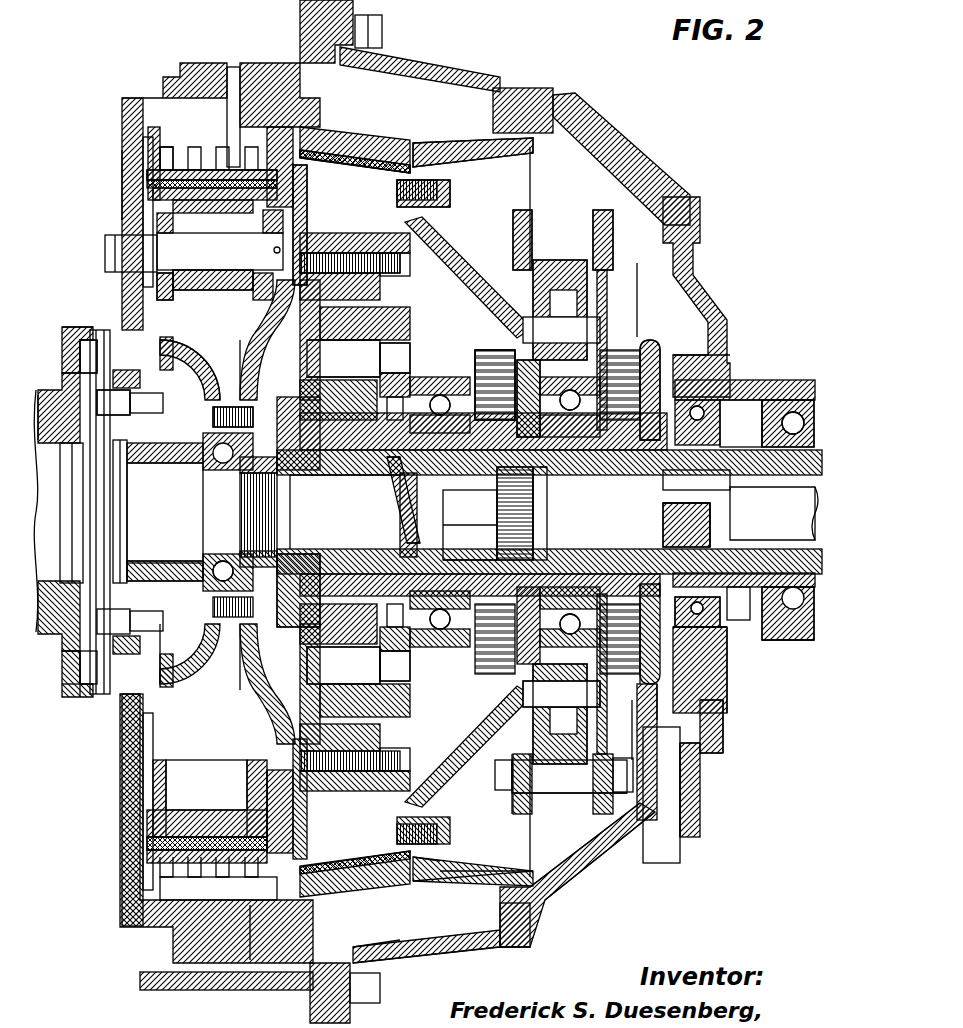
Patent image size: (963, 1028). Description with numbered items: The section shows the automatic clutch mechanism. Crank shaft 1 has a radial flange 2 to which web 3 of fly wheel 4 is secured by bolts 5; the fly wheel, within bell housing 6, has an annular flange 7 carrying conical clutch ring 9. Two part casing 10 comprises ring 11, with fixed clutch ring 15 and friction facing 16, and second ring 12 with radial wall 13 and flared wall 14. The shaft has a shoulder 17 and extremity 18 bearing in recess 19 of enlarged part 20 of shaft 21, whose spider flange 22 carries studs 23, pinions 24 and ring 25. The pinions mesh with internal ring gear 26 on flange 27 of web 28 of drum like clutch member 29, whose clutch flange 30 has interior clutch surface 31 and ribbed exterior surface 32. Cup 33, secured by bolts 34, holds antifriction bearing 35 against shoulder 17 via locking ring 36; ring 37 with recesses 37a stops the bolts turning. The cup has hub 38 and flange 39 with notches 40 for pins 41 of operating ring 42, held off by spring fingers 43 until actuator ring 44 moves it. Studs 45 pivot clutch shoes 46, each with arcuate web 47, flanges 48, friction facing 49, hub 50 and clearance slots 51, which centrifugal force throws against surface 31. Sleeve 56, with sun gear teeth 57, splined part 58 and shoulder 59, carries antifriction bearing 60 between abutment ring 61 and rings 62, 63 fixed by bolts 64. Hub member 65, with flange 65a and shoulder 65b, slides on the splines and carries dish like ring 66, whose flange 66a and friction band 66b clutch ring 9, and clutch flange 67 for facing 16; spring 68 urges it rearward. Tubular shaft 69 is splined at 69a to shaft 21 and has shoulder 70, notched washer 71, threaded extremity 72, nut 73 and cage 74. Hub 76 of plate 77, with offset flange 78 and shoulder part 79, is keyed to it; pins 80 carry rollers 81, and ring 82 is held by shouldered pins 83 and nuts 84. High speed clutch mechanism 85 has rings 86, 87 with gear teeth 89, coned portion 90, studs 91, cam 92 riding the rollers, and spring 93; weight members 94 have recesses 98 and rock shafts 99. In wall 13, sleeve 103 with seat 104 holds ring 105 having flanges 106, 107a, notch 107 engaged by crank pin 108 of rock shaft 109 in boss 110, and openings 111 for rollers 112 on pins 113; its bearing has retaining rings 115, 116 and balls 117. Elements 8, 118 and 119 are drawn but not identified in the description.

The crank shaft 1 is at (43, 457).
The radial flange 2 is at (92, 480).
The web 3 is at (122, 182).
The fly wheel 4 is at (118, 100).
The bolts 5 is at (378, 837).
The bell housing 6 is at (138, 982).
The annular flange 7 is at (252, 965).
The driven shaft 8 is at (807, 508).
The conical clutch ring 9 is at (380, 892).
The two part casing 10 is at (520, 928).
The ring 11 is at (415, 950).
The second ring 12 is at (560, 876).
The radial wall 13 is at (712, 300).
The flared wall 14 is at (585, 852).
The fixed clutch ring 15 is at (442, 887).
The friction facing 16 is at (421, 885).
The shoulder 17 is at (203, 490).
The extremity 18 is at (357, 497).
The recess 19 is at (304, 512).
The part of enlarged diameter 20 is at (400, 480).
The shaft 21 is at (543, 470).
The spider flange 22 is at (307, 655).
The studs 23 is at (368, 503).
The pinion 24 is at (368, 378).
The ring 25 is at (343, 495).
The internal ring gear 26 is at (286, 733).
The annular flange 27 is at (312, 789).
The web 28 is at (305, 200).
The clutch member 29 is at (143, 855).
The clutch flange 30 is at (170, 176).
The interior clutch surface 31 is at (300, 190).
The ribbed exterior surface 32 is at (200, 876).
The cup 33 is at (215, 670).
The bolts 34 is at (213, 415).
The antifriction bearing 35 is at (225, 556).
The threaded locking ring 36 is at (240, 490).
The ring 37 is at (240, 365).
The recesses 37a is at (315, 550).
The hub 38 is at (190, 560).
The peripheral flange 39 is at (165, 690).
The notches 40 is at (175, 370).
The pins 41 is at (99, 355).
The operating ring 42 is at (100, 325).
The spring fingers 43 is at (95, 680).
The actuator ring 44 is at (62, 697).
The studs 45 is at (220, 251).
The clutch shoes 46 is at (143, 200).
The arcuate web 47 is at (277, 170).
The flanges 48 is at (253, 285).
The friction facing 49 is at (205, 150).
The hub 50 is at (210, 300).
The clearance slots 51 is at (105, 255).
The sleeve 56 is at (395, 475).
The teeth 57 is at (405, 540).
The splined part 58 is at (470, 525).
The annular shoulder 59 is at (470, 519).
The antifriction bearing 60 is at (470, 545).
The spring end abutment ring 61 is at (430, 450).
The ring 62 is at (408, 645).
The ring 63 is at (452, 640).
The bolts 64 is at (360, 253).
The hub like member 65 is at (600, 445).
The radial flange 65a is at (500, 350).
The annular shoulder 65b is at (538, 475).
The dish like ring 66 is at (425, 232).
The peripheral flange 66a is at (400, 176).
The friction band 66b is at (365, 135).
The clutch flange 67 is at (490, 862).
The spring 68 is at (478, 360).
The tubular shaft 69 is at (696, 480).
The splined connection 69a is at (533, 515).
The annular shoulder 70 is at (600, 440).
The notched washer 71 is at (663, 540).
The threaded extremity 72 is at (670, 510).
The nut 73 is at (720, 530).
The cage 74 is at (745, 535).
The hub 76 is at (675, 412).
The circular plate 77 is at (660, 360).
The offset flange 78 is at (613, 240).
The shoulder part 79 is at (637, 295).
The pins 80 is at (648, 700).
The roller 81 is at (632, 700).
The ring 82 is at (515, 752).
The shouldered pins 83 is at (569, 776).
The nuts 84 is at (495, 775).
The centrifugal high speed clutch mechanism 85 is at (560, 243).
The front ring 86 is at (572, 612).
The rear ring 87 is at (680, 615).
The gear teeth 89 is at (560, 672).
The coned portion 90 is at (640, 530).
The studs 91 is at (690, 605).
The cam 92 is at (590, 672).
The spring 93 is at (680, 640).
The weight member 94 is at (575, 262).
The recess 98 is at (173, 290).
The rock shaft 99 is at (540, 793).
The sleeve 103 is at (770, 640).
The internal seat 104 is at (727, 645).
The ring 105 is at (727, 660).
The front end radial flange 106 is at (715, 690).
The notch 107 is at (722, 705).
The rear end radial flange 107a is at (750, 642).
The crank pin 108 is at (723, 720).
The rock shaft 109 is at (661, 795).
The boss 110 is at (700, 800).
The openings 111 is at (665, 680).
The roller 112 is at (740, 672).
The pin 113 is at (760, 678).
The inner retaining ring 115 is at (770, 380).
The outer retaining ring 116 is at (740, 400).
The balls 117 is at (715, 380).
The ball bearing 118 is at (800, 400).
The spacer 119 is at (741, 603).